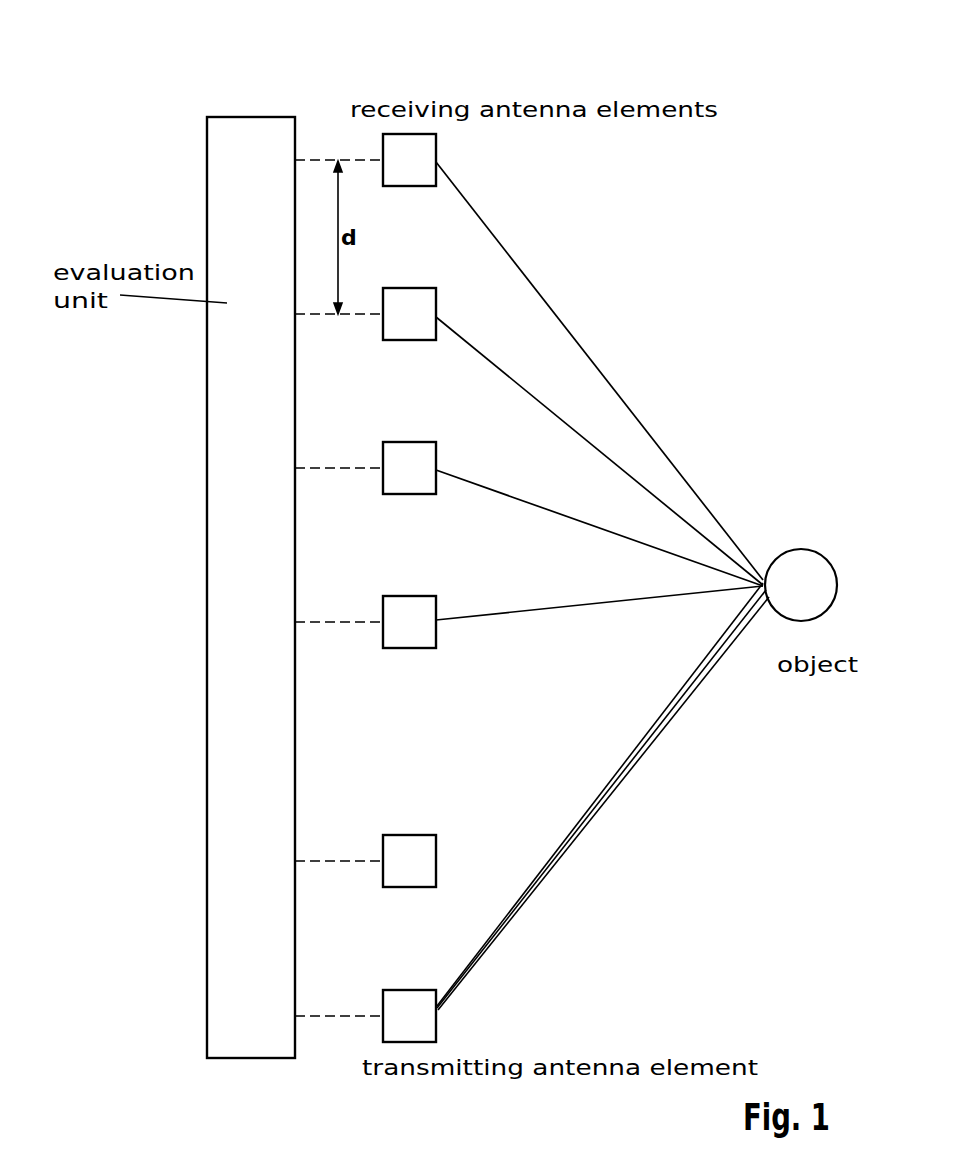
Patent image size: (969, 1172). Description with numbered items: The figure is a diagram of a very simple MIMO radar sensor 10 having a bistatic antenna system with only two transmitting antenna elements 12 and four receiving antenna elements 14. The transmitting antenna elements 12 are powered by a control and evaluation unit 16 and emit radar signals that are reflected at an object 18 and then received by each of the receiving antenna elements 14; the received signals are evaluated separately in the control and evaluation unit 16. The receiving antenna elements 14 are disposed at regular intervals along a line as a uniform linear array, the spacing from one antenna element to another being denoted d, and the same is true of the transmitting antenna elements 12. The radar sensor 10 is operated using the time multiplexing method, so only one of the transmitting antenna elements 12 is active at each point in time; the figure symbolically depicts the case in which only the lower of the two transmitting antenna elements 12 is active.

The radar sensor 10 is at (422, 87).
The transmitting antenna elements 12 is at (436, 847).
The receiving antenna elements 14 is at (436, 147).
The control and evaluation unit 16 is at (207, 565).
The object 18 is at (797, 549).